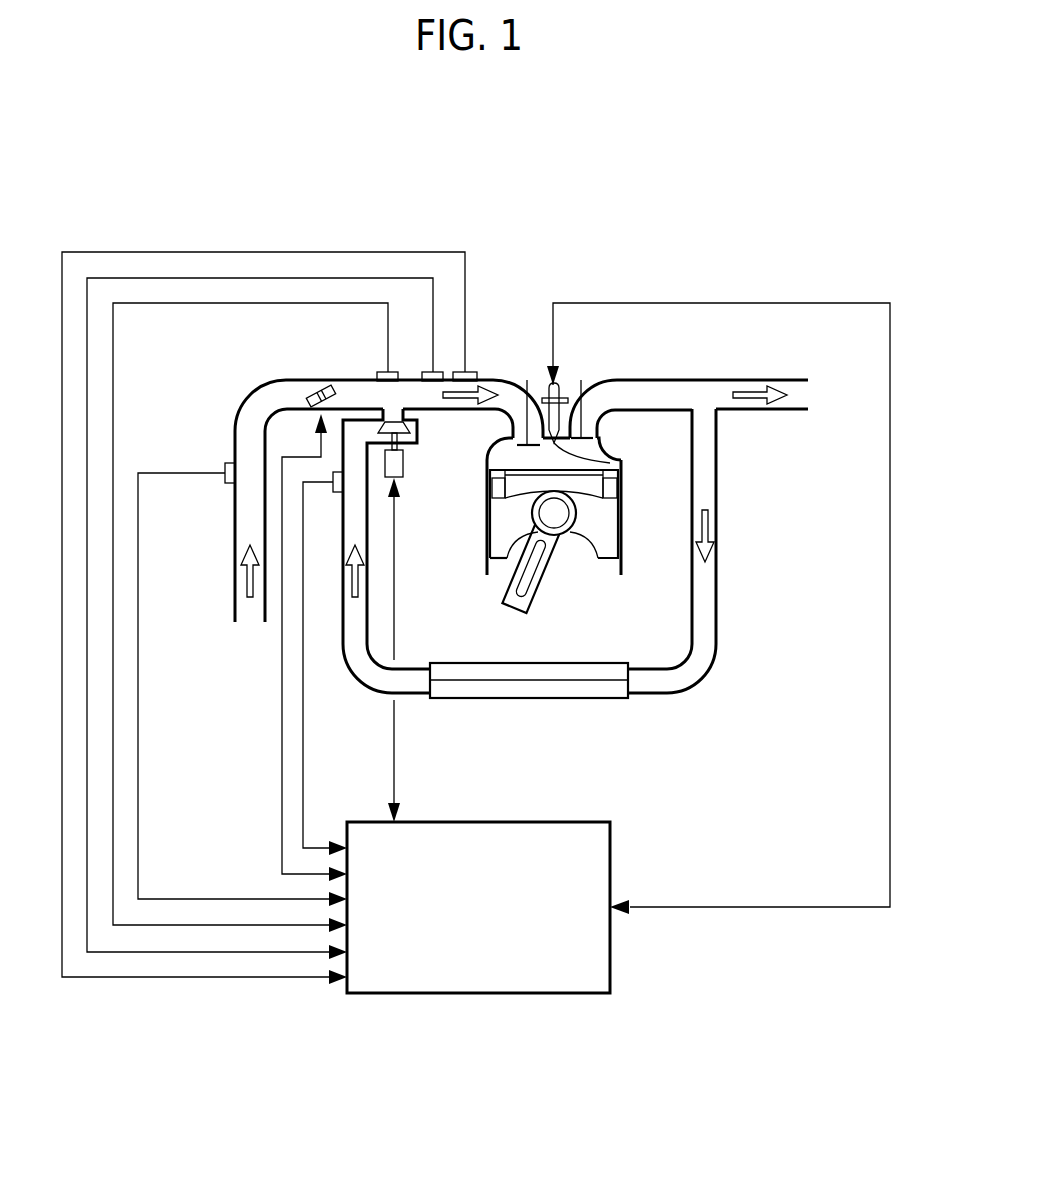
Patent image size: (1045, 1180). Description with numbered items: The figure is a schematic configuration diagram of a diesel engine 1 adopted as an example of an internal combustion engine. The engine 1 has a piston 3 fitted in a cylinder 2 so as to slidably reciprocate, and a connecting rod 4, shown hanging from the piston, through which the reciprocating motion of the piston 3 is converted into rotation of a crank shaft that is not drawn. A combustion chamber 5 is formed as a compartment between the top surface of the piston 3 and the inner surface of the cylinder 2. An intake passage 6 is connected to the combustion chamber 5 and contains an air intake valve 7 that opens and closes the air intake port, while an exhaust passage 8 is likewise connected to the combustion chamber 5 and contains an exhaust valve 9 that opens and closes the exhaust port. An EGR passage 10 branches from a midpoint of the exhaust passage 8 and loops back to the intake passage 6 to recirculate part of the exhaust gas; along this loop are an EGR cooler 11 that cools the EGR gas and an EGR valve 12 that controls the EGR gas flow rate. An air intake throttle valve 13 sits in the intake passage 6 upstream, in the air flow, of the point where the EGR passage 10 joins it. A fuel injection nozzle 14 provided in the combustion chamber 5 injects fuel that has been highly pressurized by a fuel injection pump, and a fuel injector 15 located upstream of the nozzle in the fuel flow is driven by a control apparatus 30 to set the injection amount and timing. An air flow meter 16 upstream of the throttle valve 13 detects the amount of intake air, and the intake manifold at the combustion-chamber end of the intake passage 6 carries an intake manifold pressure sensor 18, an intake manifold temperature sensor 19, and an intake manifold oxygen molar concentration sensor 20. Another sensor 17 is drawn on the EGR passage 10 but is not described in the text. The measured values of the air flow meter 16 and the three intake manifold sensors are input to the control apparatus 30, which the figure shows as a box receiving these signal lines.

The diesel engine 1 is at (552, 214).
The cylinder 2 is at (485, 520).
The piston 3 is at (604, 518).
The connecting rod 4 is at (543, 587).
The combustion chamber 5 is at (607, 442).
The intake passage 6 is at (247, 402).
The air intake valve 7 is at (527, 380).
The exhaust passage 8 is at (686, 380).
The exhaust valve 9 is at (583, 380).
The EGR passage 10 is at (718, 583).
The EGR cooler 11 is at (543, 698).
The EGR valve 12 is at (405, 468).
The air intake throttle valve 13 is at (313, 390).
The fuel injection nozzle 14 is at (610, 463).
The fuel injector 15 is at (550, 383).
The air flow meter 16 is at (232, 487).
The EGR gas sensor 17 is at (338, 493).
The intake manifold pressure sensor 18 is at (428, 370).
The intake manifold temperature sensor 19 is at (472, 370).
The intake manifold oxygen molar concentration sensor 20 is at (385, 370).
The control apparatus 30 is at (478, 822).